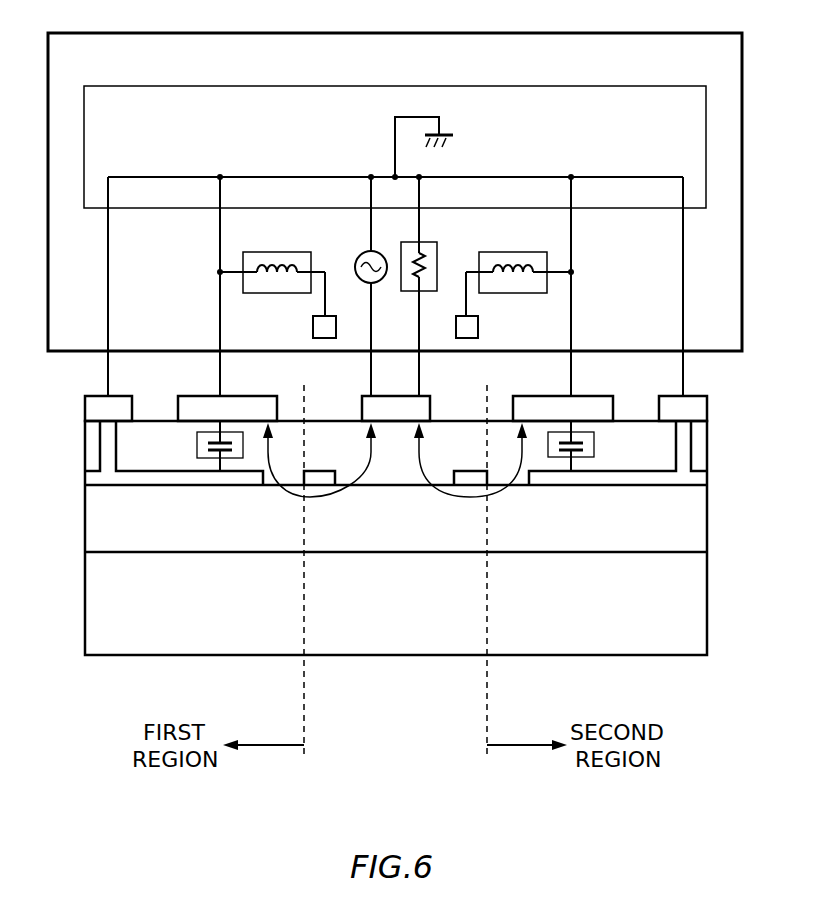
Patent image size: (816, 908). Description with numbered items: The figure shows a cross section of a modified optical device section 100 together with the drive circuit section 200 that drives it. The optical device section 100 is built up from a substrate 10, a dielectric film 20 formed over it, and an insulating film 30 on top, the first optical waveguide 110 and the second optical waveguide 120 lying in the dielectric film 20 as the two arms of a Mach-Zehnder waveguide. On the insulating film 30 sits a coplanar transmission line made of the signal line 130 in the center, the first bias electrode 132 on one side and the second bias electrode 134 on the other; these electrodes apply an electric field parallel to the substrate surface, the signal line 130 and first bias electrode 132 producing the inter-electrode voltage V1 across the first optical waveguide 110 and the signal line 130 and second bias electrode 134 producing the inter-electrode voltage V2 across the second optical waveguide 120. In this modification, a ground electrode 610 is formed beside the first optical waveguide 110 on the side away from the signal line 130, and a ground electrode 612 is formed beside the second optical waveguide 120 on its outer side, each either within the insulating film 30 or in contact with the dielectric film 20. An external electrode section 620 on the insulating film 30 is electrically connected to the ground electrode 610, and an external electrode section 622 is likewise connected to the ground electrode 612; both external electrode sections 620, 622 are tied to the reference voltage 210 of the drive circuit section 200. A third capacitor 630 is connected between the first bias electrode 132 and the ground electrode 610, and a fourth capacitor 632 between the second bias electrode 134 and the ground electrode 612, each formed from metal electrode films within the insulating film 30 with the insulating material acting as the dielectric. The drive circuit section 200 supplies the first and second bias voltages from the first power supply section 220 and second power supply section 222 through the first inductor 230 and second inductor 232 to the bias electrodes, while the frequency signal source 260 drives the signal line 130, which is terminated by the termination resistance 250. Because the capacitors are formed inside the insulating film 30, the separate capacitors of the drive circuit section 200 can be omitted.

The drive circuit section 200 is at (657, 33).
The reference voltage 210 is at (553, 86).
The first power supply section 220 is at (313, 329).
The second power supply section 222 is at (478, 329).
The first inductor 230 is at (278, 252).
The second inductor 232 is at (513, 252).
The termination resistance 250 is at (438, 248).
The frequency signal source 260 is at (358, 256).
The external electrode section 620 is at (120, 396).
The external electrode section 622 is at (698, 396).
The signal line 130 is at (423, 396).
The first bias electrode 132 is at (254, 396).
The second bias electrode 134 is at (605, 396).
The optical device section 100 is at (598, 655).
The substrate 10 is at (92, 601).
The dielectric film 20 is at (92, 534).
The insulating film 30 is at (130, 442).
The ground electrode 610 is at (165, 469).
The ground electrode 612 is at (625, 470).
The third capacitor 630 is at (197, 437).
The fourth capacitor 632 is at (595, 445).
The first optical waveguide 110 is at (320, 478).
The second optical waveguide 120 is at (470, 478).
The inter-electrode voltage V1 is at (320, 516).
The inter-electrode voltage V2 is at (470, 516).